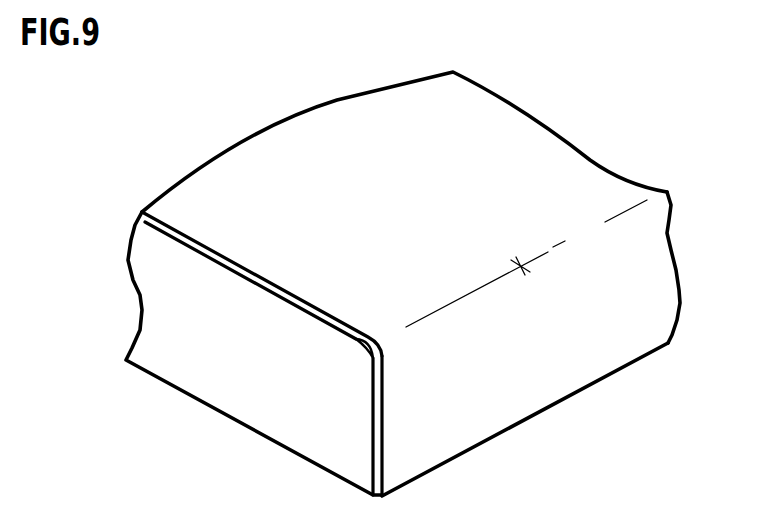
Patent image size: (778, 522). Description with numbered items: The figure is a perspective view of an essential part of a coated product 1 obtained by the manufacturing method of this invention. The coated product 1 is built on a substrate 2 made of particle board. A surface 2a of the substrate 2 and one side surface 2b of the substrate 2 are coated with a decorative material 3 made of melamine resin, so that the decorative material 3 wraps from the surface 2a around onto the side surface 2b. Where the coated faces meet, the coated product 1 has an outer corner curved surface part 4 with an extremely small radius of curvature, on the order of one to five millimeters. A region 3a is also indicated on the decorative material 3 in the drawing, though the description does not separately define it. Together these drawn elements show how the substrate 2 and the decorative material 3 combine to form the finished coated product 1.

The coated product 1 is at (587, 117).
The substrate 2 is at (265, 393).
The surface 2a is at (227, 250).
The side surface 2b is at (381, 417).
The decorative material 3 is at (289, 166).
The inclined surface 3a is at (520, 405).
The outer corner curved surface part 4 is at (521, 266).